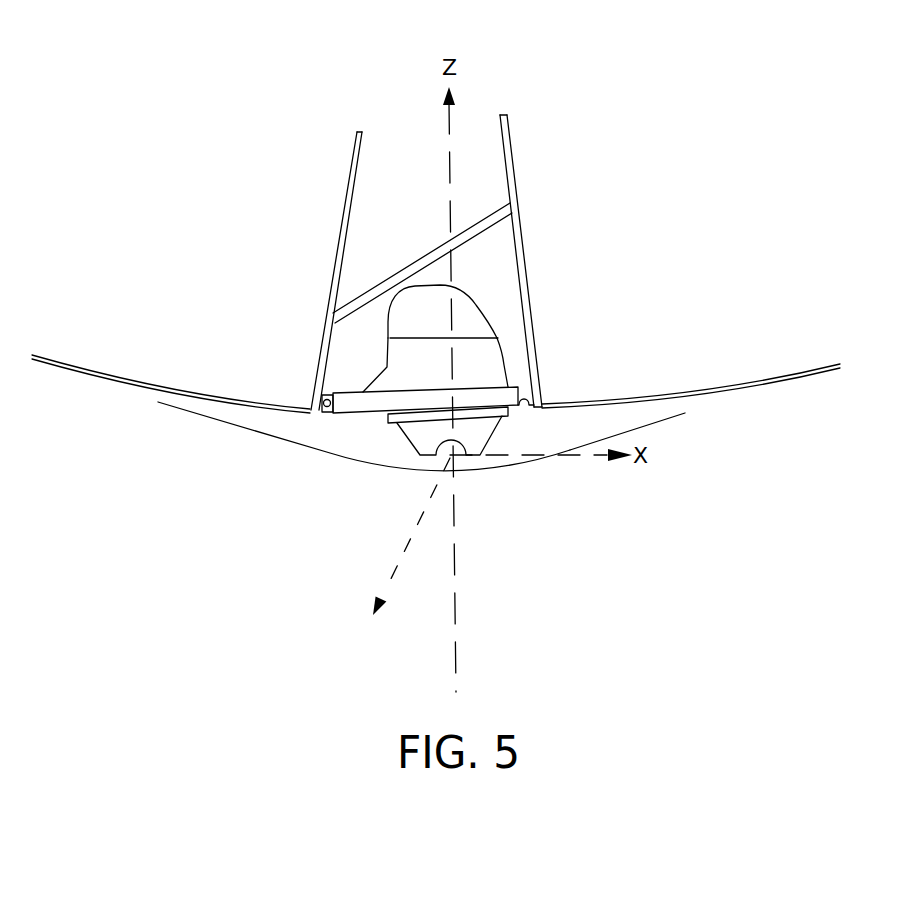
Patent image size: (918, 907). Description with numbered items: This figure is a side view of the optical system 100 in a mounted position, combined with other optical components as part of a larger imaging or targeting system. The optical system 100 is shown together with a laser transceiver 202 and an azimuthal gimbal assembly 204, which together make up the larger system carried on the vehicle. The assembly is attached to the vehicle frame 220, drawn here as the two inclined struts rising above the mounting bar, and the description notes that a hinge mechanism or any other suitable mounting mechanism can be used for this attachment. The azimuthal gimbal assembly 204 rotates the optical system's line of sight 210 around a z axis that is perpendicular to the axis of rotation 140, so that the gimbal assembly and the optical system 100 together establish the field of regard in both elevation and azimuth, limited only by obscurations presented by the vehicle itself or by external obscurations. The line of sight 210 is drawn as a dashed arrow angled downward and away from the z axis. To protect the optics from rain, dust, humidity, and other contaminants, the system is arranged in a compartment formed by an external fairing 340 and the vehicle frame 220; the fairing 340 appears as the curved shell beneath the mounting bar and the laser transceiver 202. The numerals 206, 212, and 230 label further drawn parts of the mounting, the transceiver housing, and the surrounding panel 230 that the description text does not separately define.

The optical system 100 is at (415, 446).
The axis of rotation 140 is at (565, 457).
The laser transceiver 202 is at (438, 327).
The azimuthal gimbal assembly 204 is at (505, 414).
The hinge 206 is at (330, 413).
The line of sight 210 is at (399, 552).
The base 212 is at (438, 378).
The vehicle frame 220 is at (333, 272).
The panel 230 is at (622, 399).
The external fairing 340 is at (198, 415).